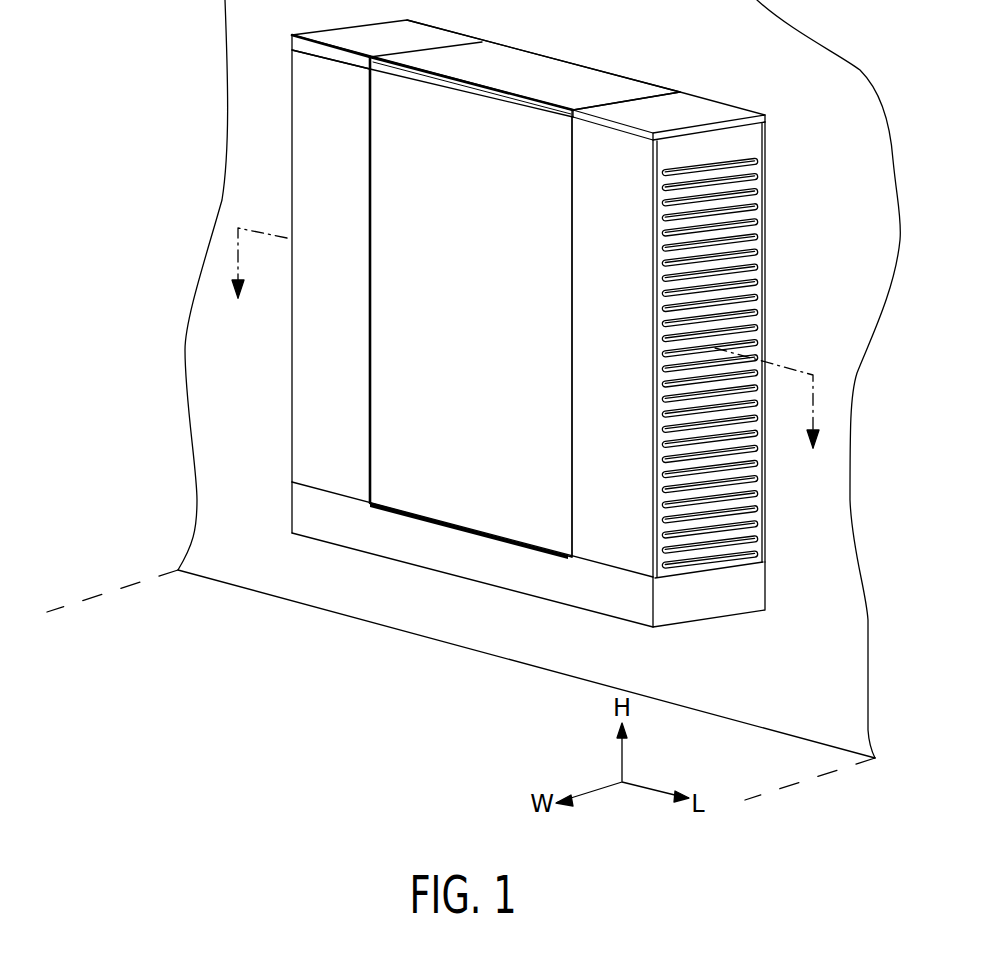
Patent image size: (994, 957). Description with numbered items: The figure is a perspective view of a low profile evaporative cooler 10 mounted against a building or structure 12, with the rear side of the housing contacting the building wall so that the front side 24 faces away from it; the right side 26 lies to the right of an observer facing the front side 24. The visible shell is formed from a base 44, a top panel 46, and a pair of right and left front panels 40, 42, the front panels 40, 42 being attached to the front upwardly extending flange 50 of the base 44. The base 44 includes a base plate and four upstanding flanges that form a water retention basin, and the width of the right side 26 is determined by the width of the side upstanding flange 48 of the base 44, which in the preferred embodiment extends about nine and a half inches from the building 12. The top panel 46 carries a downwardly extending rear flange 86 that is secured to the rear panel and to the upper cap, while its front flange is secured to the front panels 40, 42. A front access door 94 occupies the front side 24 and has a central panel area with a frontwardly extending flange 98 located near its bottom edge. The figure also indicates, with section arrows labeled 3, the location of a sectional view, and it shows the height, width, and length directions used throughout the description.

The evaporative cooler 10 is at (752, 79).
The building or structure 12 is at (858, 290).
The front side 24 is at (308, 428).
The right side 26 is at (770, 588).
The right front panel 40 is at (603, 550).
The left front panel 42 is at (328, 480).
The base 44 is at (667, 643).
The top panel 46 is at (558, 60).
The upstanding flange of base 48 is at (712, 608).
The front upwardly extending flange of base 50 is at (452, 563).
The downwardly extending rear flange of top panel 86 is at (500, 101).
The front access door 94 is at (467, 278).
The frontwardly extending flange 98 is at (470, 528).
The section line 3- 3 is at (525, 356).